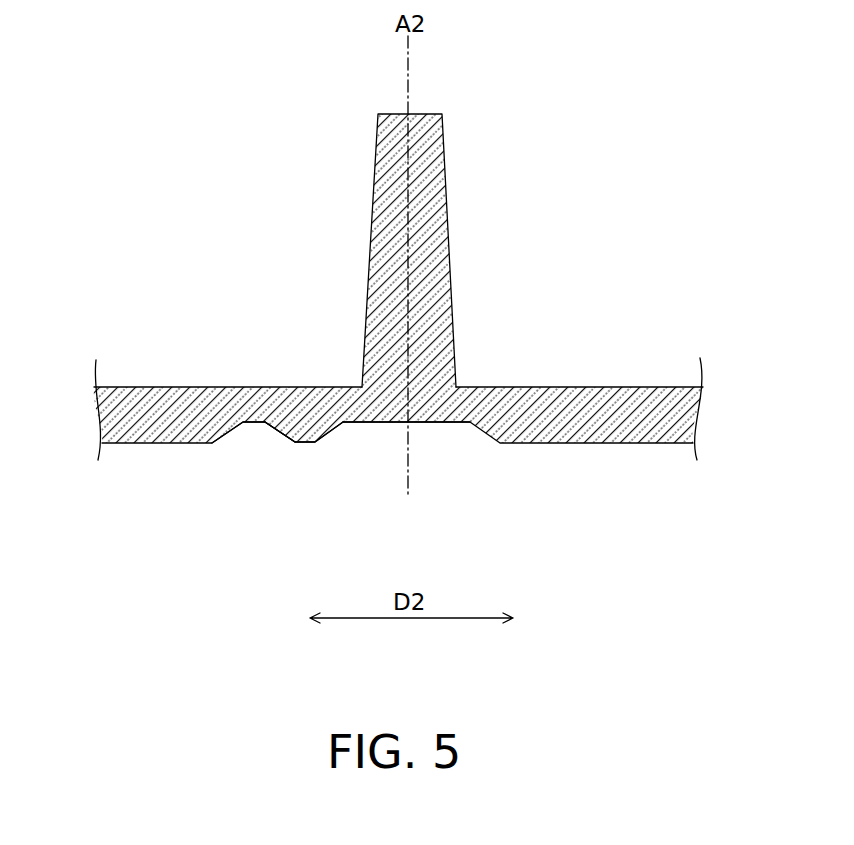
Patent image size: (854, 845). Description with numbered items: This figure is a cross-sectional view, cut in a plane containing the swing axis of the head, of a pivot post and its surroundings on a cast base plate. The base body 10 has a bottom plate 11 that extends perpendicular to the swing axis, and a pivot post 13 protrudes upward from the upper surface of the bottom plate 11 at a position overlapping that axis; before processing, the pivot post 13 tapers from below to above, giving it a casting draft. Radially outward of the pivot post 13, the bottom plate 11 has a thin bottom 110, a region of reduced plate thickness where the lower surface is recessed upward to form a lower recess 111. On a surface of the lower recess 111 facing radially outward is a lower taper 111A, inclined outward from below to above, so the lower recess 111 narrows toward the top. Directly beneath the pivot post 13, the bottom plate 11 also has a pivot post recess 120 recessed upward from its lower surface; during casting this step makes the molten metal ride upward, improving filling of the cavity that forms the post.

The base body 10 is at (398, 348).
The bottom plate 11 is at (572, 387).
The pivot post 13 is at (378, 135).
The thin bottom 110 is at (275, 502).
The lower recess 111 is at (250, 422).
The lower taper 111A is at (282, 433).
The pivot post recess 120 is at (447, 422).